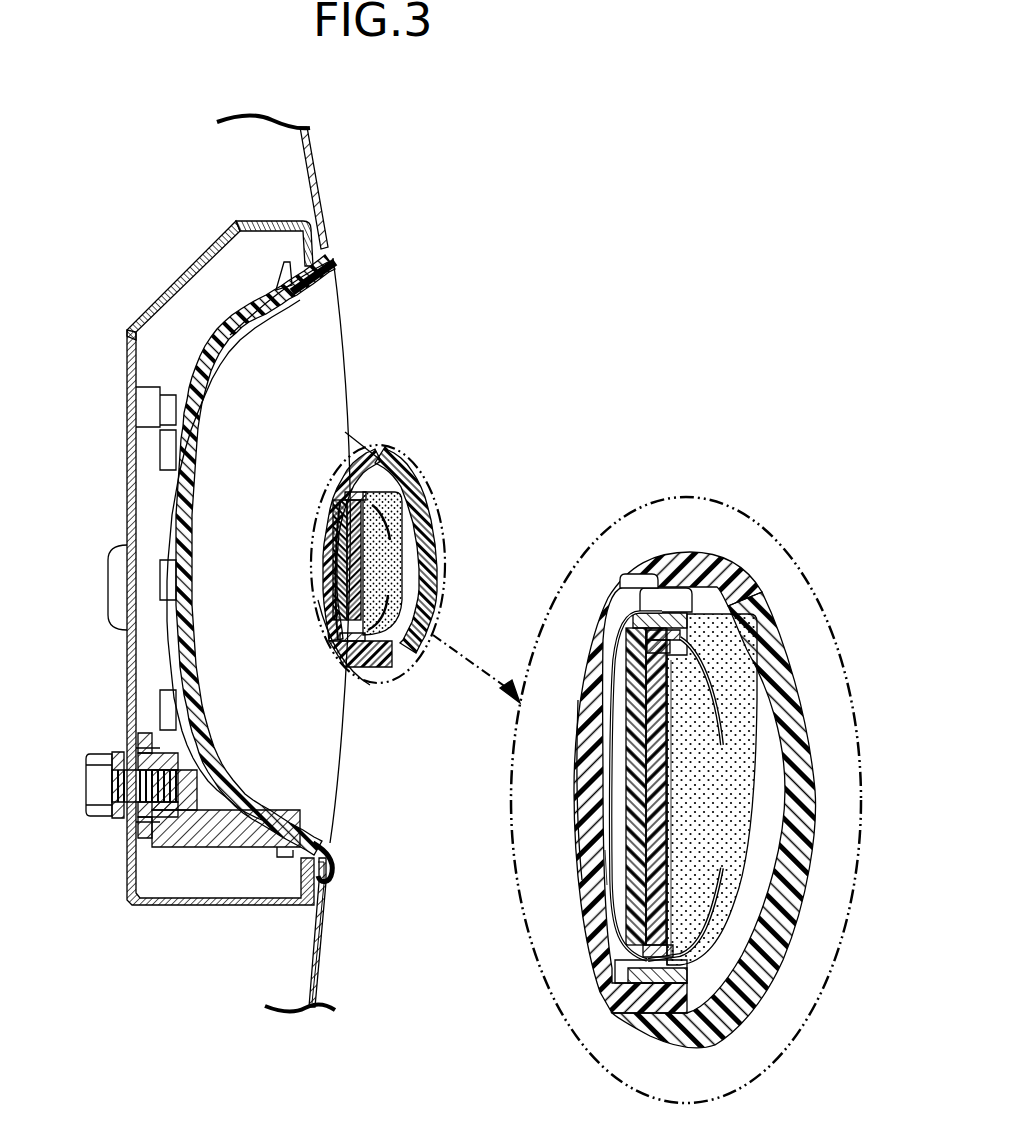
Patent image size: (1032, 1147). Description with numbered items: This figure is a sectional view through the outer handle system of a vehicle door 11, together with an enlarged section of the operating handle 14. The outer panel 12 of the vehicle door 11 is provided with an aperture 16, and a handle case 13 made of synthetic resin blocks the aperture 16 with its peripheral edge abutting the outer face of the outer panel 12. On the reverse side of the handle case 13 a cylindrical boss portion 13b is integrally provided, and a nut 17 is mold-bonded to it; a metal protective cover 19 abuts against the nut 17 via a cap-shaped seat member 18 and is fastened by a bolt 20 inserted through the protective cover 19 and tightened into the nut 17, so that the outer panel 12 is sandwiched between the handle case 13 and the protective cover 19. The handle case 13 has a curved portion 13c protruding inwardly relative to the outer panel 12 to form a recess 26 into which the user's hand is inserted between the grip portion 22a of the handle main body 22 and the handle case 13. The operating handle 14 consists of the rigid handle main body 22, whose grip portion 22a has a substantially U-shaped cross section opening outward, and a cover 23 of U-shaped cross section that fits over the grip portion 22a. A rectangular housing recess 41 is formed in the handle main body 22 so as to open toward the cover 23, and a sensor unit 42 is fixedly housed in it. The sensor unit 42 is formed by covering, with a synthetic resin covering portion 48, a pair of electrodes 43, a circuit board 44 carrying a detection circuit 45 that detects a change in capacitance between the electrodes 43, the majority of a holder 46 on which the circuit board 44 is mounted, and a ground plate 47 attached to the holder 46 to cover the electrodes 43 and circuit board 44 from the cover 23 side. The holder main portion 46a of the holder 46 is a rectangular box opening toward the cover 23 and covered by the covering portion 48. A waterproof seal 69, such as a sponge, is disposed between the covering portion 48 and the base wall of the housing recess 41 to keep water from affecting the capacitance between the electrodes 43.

The vehicle door 11 is at (318, 962).
The outer panel 12 is at (320, 925).
The handle case 13 is at (236, 296).
The cylindrical boss portion 13b is at (181, 850).
The curved portion 13c is at (228, 325).
The operating handle 14 is at (505, 380).
The aperture 16 is at (323, 856).
The nut 17 is at (156, 838).
The cap-shaped seat member 18 is at (137, 738).
The protective cover 19 is at (120, 462).
The bolt 20 is at (95, 785).
The handle main body 22 is at (307, 518).
The grip portion 22a is at (590, 762).
The cover 23 is at (415, 505).
The recess 26 is at (254, 574).
The housing recess 41 is at (705, 965).
The sensor unit 42 is at (758, 808).
The electrode 43 is at (600, 690).
The circuit board 44 is at (668, 752).
The detection circuit 45 is at (682, 850).
The holder 46 is at (592, 832).
The holder main portion 46a is at (625, 598).
The ground plate 47 is at (726, 878).
The covering portion 48 is at (715, 680).
The waterproof seal 69 is at (614, 866).